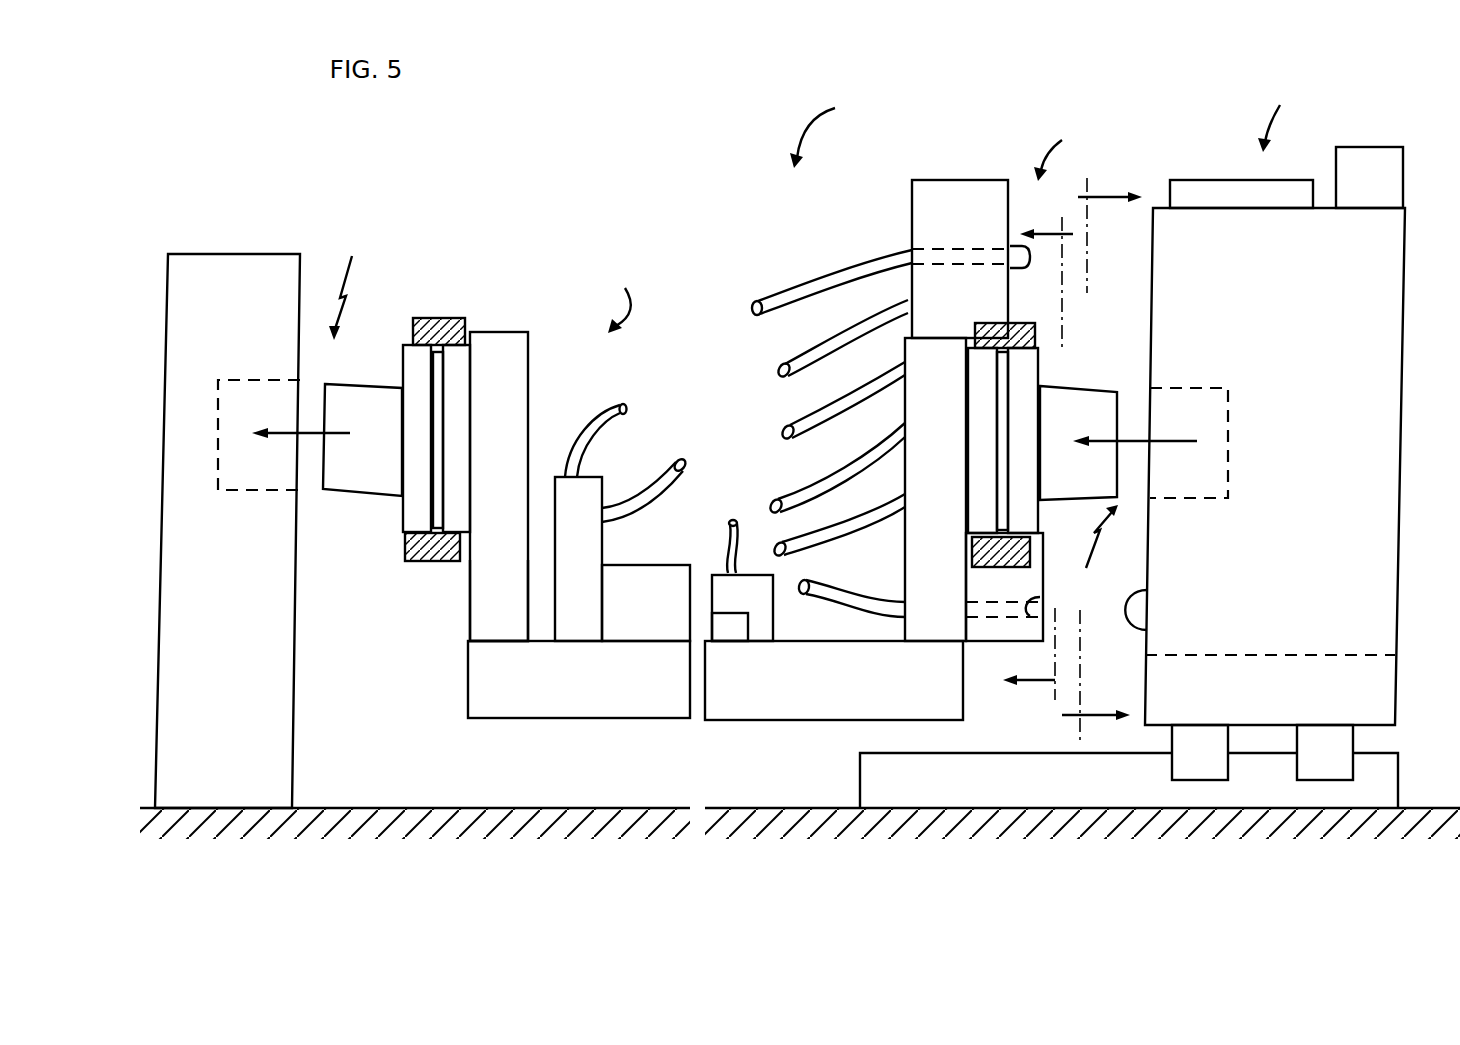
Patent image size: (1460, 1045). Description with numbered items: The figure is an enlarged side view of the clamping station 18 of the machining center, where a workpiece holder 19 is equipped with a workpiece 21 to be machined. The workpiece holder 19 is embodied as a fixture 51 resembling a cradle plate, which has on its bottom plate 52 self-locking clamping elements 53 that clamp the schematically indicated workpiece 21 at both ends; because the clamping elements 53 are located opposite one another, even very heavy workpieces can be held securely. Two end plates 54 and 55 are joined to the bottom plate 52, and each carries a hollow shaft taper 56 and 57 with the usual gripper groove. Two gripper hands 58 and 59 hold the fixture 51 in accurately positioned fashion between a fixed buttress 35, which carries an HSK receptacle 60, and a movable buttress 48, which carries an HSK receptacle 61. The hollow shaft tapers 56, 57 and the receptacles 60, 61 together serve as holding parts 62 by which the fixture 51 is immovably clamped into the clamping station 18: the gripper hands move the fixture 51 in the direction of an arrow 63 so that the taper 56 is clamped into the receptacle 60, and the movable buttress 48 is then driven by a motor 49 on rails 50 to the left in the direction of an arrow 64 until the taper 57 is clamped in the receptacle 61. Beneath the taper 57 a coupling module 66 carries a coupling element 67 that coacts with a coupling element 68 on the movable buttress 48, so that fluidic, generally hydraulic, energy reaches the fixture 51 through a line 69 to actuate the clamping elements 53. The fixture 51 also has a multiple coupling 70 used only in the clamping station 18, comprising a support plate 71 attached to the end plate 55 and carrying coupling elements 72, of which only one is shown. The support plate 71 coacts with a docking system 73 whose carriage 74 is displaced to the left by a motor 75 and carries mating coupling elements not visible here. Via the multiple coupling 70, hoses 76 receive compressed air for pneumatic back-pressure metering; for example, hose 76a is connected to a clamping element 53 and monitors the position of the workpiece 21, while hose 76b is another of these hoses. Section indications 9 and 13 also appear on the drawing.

The fixed buttress 35 is at (198, 280).
The HSK receptacle 60 is at (250, 465).
The arrow 63 is at (312, 420).
The holding parts 62 is at (723, 411).
The hollow shaft taper 56 is at (385, 468).
The gripper hand 58 is at (415, 565).
The fixture 51 is at (505, 335).
The end plate 54 is at (490, 600).
The clamping element 53 is at (584, 613).
The workpiece 21 is at (648, 613).
The bottom plate 52 is at (503, 697).
The workpiece holder 19 is at (612, 295).
The clamping station 18 is at (827, 132).
The hose 76a is at (613, 403).
The hose 76b is at (727, 522).
The hoses 76 is at (800, 420).
The line 69 is at (678, 468).
The end plate 55 is at (920, 395).
The support plate 71 is at (940, 205).
The coupling element 72 is at (1030, 275).
The coupling module 66 is at (988, 632).
The coupling element 67 is at (1020, 628).
The gripper hand 59 is at (1025, 322).
The hollow shaft taper 57 is at (1060, 410).
The arrow 64 is at (1168, 447).
The HSK receptacle 61 is at (1196, 402).
The movable buttress 48 is at (1352, 598).
The motor 49 is at (1350, 690).
The coupling element 68 is at (1140, 612).
The rails 50 is at (1375, 775).
The carriage 74 is at (1215, 188).
The motor 75 is at (1355, 158).
The docking system 73 is at (1279, 113).
The multiple coupling 70 is at (1060, 142).
The section line 9- 9 is at (1100, 457).
The section line 13- 13 is at (1035, 458).